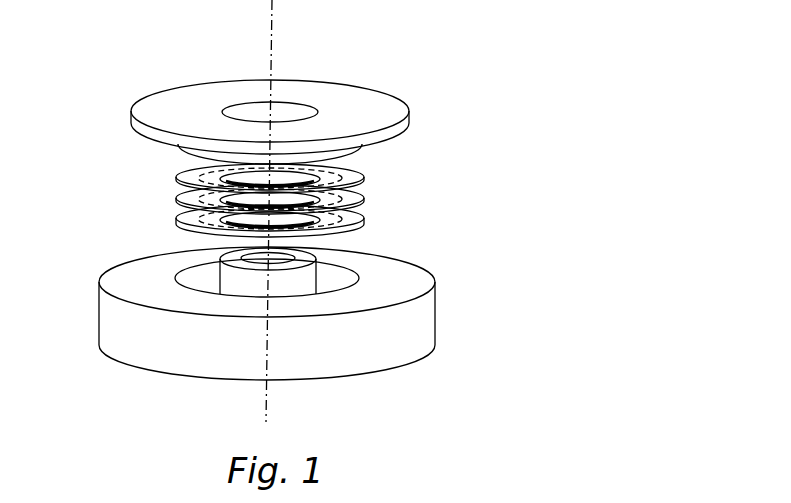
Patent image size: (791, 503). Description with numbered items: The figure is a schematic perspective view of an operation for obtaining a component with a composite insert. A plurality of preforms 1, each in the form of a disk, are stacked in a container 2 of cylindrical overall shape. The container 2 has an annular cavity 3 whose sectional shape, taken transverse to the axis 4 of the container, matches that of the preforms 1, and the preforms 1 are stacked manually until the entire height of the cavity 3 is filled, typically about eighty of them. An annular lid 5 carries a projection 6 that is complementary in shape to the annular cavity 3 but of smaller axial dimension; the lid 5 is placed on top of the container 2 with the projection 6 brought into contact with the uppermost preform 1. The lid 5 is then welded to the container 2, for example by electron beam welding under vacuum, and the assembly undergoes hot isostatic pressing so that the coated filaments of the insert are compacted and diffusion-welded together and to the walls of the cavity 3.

The preforms 1 is at (362, 218).
The container 2 is at (118, 244).
The annular cavity 3 is at (335, 280).
The axis 4 is at (272, 28).
The annular lid 5 is at (363, 105).
The projection 6 is at (178, 152).